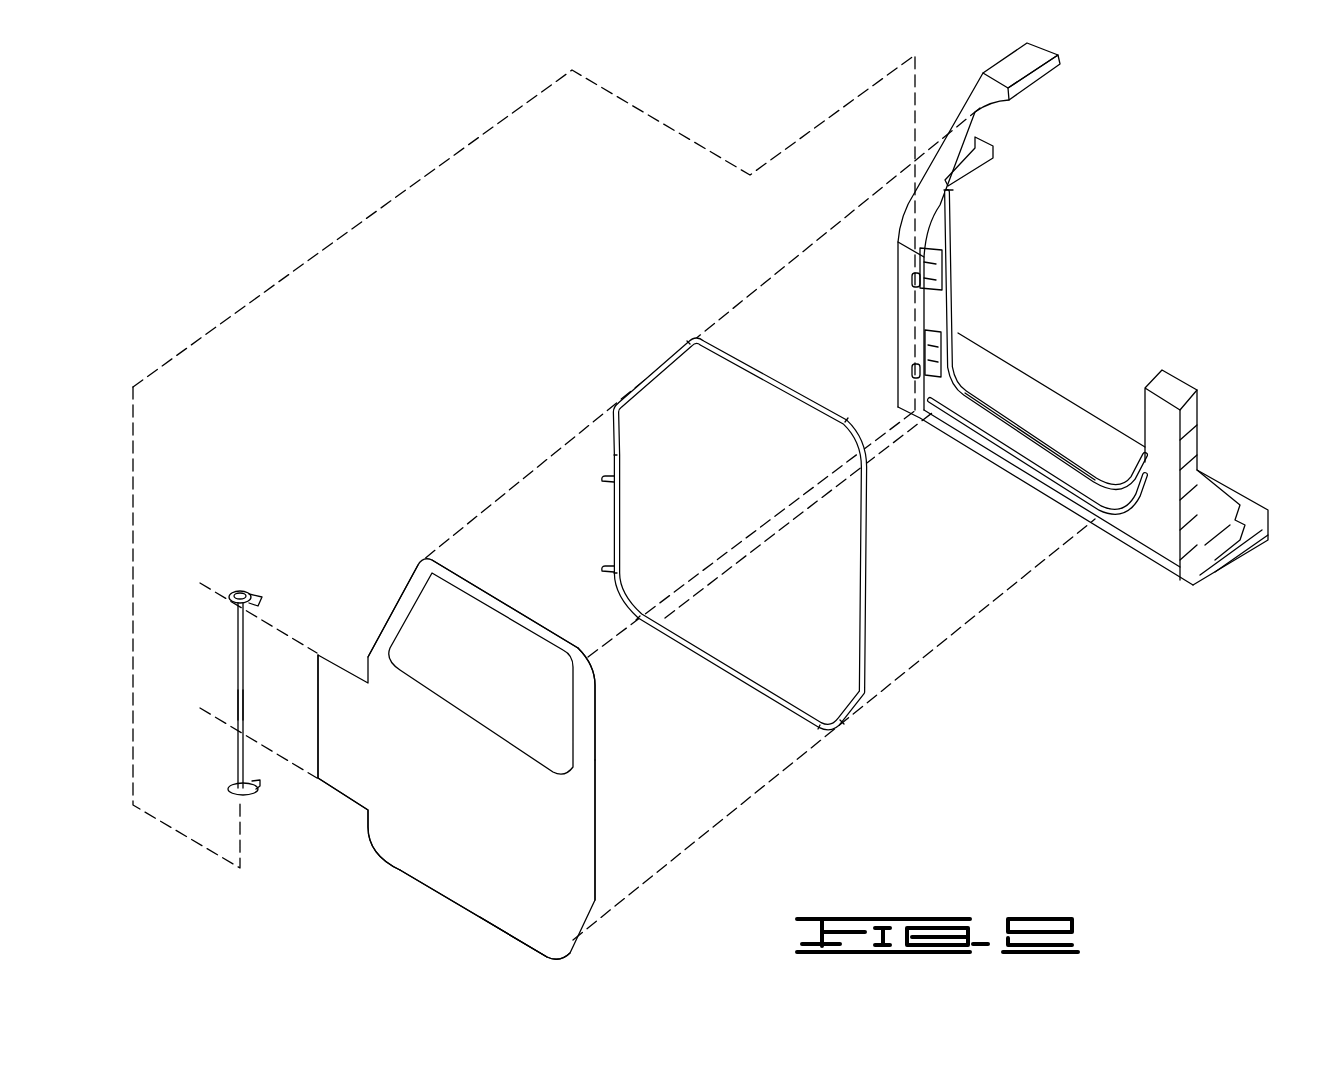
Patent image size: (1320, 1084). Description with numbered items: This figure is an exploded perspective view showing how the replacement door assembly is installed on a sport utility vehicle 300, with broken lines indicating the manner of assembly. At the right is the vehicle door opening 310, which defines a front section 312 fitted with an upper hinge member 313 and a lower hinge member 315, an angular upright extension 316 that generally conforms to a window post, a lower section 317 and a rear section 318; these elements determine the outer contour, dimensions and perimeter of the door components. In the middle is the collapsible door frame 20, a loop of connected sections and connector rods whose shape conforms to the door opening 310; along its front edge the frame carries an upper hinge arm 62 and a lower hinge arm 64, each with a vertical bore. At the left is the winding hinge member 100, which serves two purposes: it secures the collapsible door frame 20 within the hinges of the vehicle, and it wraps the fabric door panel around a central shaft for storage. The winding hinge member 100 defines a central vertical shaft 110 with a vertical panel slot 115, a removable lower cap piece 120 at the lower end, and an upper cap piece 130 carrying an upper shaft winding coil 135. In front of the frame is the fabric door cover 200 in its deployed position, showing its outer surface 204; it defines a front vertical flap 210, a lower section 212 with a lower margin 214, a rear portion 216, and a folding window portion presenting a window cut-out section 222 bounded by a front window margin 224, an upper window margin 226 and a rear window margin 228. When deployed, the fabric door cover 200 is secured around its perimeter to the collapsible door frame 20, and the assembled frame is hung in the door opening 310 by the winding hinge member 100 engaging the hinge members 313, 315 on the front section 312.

The collapsible door frame 20 is at (753, 535).
The upper hinge arm 62 is at (608, 478).
The lower hinge arm 64 is at (604, 568).
The winding hinge member 100 is at (244, 663).
The central vertical shaft 110 is at (238, 670).
The vertical panel slot 115 is at (243, 700).
The removable lower cap piece 120 is at (232, 787).
The upper cap piece 130 is at (255, 602).
The upper shaft winding coil 135 is at (235, 590).
The fabric door cover 200 is at (480, 743).
The outer surface 204 is at (455, 868).
The front vertical flap 210 is at (352, 768).
The lower section 212 is at (395, 843).
The lower margin 214 is at (495, 930).
The rear portion 216 is at (600, 835).
The window cut-out section 222 is at (517, 665).
The front window margin 224 is at (405, 592).
The upper window margin 226 is at (490, 580).
The rear window margin 228 is at (583, 713).
The sport utility vehicle 300 is at (1045, 70).
The door opening 310 is at (1083, 314).
The front section 312 is at (927, 243).
The upper hinge member 313 is at (930, 277).
The lower hinge member 315 is at (933, 353).
The angular upright extension 316 is at (962, 148).
The lower section 317 is at (1020, 445).
The rear section 318 is at (1165, 477).